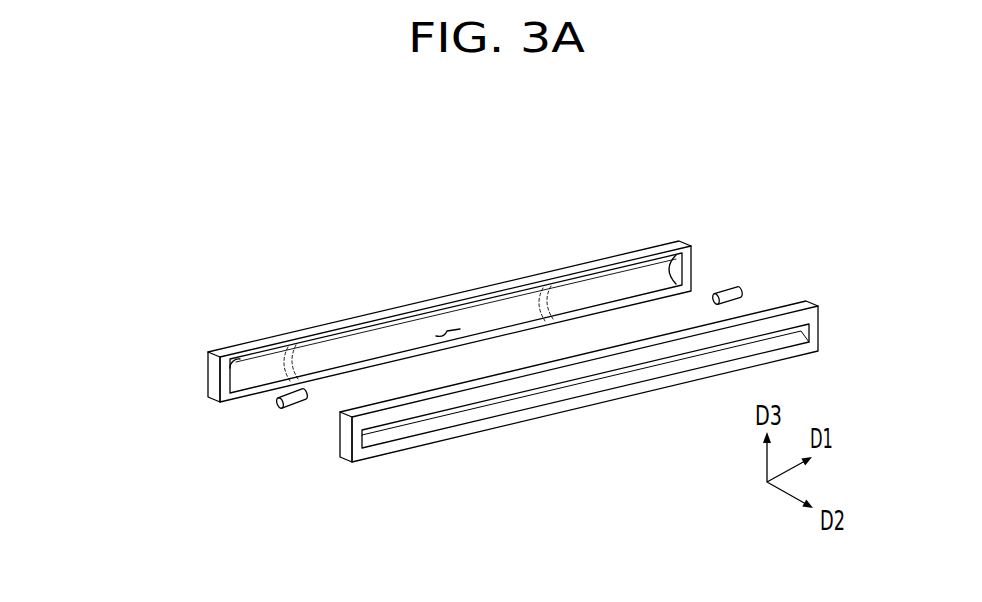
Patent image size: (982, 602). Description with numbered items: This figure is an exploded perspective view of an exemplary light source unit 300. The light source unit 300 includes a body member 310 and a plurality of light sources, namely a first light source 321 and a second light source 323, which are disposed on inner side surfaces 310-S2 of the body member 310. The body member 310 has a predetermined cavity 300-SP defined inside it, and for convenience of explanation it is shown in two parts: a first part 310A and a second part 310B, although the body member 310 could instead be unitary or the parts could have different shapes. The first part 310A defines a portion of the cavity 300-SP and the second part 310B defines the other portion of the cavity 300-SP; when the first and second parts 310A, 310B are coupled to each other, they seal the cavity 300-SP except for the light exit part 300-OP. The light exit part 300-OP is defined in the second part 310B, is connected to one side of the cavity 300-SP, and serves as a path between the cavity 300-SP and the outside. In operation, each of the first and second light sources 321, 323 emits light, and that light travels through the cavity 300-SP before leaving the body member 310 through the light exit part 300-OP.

The light source unit 300 is at (733, 166).
The cavity 300-SP is at (443, 333).
The light exit part 300-OP is at (586, 395).
The body member 310 is at (125, 372).
The first part 310A is at (213, 378).
The second part 310B is at (345, 441).
The inner side surfaces 310-S2 is at (240, 362).
The first light source 321 is at (277, 404).
The second light source 323 is at (727, 292).